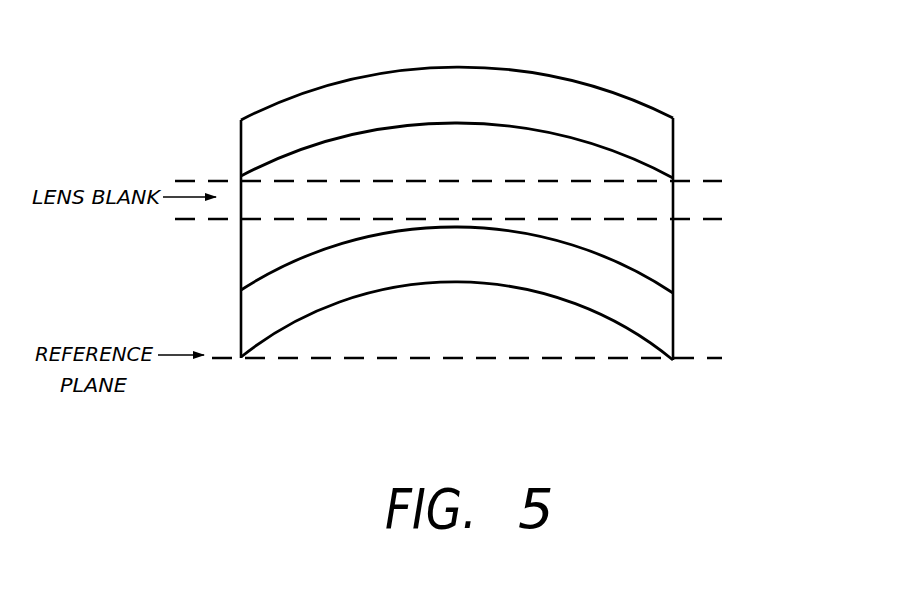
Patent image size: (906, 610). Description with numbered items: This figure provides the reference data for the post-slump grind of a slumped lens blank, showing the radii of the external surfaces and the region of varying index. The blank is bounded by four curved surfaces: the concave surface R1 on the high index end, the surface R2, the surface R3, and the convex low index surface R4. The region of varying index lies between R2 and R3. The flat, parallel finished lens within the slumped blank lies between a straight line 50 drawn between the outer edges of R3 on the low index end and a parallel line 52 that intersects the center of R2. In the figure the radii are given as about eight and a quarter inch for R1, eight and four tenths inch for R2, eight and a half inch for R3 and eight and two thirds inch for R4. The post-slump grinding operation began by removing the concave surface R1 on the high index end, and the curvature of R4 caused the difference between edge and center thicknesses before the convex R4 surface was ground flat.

The concave high index surface radius R1 is at (238, 333).
The second surface radius R2 is at (239, 288).
The third surface radius R3 is at (418, 150).
The convex low index surface radius R4 is at (418, 93).
The straight line 50 is at (475, 239).
The parallel line 52 is at (475, 247).